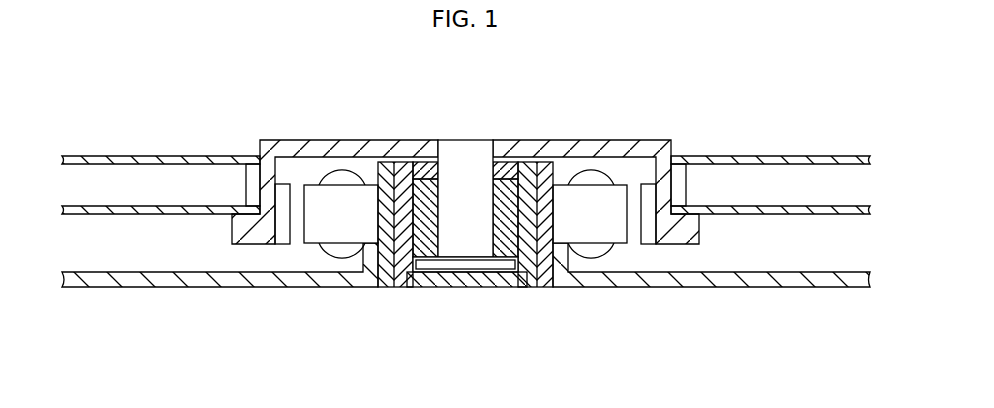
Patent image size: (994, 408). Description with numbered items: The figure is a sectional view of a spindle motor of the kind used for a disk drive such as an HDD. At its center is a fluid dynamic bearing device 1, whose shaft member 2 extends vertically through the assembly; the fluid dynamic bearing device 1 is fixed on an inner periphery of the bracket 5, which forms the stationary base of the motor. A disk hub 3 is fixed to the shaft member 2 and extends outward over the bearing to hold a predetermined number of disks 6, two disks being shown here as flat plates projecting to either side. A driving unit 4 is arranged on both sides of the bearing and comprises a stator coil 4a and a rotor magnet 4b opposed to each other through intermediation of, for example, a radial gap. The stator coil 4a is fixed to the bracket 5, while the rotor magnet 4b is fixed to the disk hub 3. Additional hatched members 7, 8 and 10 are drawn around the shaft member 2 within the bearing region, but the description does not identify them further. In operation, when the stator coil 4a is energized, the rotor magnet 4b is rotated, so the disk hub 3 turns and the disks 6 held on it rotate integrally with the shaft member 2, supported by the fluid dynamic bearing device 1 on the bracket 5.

The fluid dynamic bearing device 1 is at (527, 158).
The shaft member 2 is at (477, 134).
The disk hub 3 is at (628, 150).
The driving unit 4 is at (592, 337).
The stator coil 4a is at (592, 252).
The rotor magnet 4b is at (648, 238).
The bracket 5 is at (553, 273).
The disks 6 is at (782, 156).
The sleeve 7 is at (402, 180).
The bushing 8 is at (510, 188).
The spacer 10 is at (423, 178).